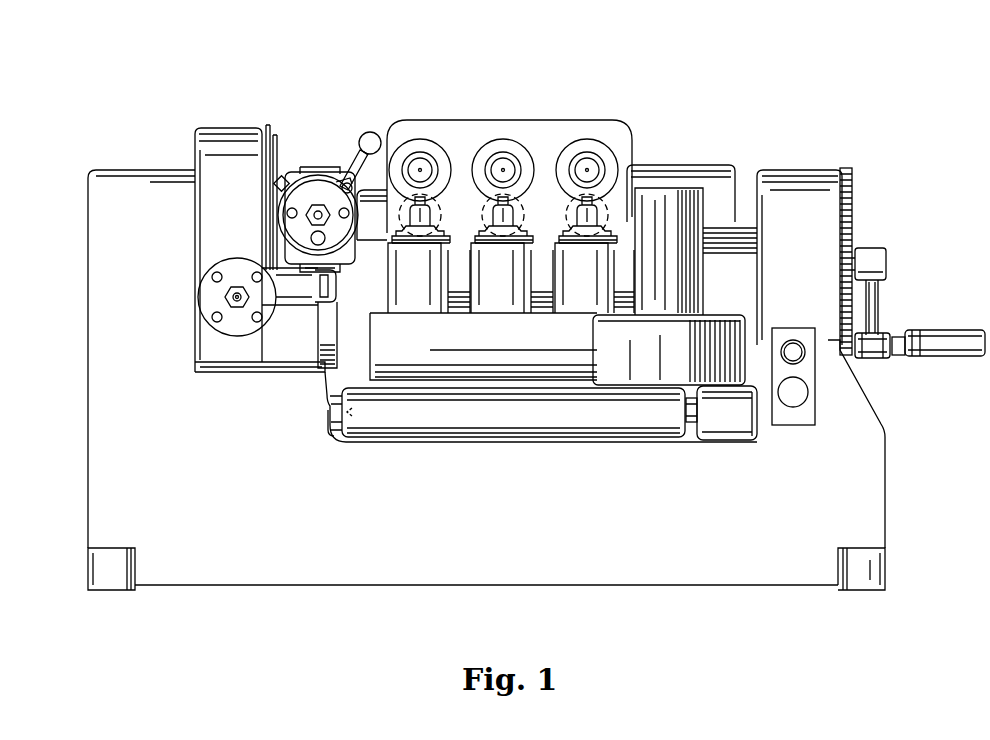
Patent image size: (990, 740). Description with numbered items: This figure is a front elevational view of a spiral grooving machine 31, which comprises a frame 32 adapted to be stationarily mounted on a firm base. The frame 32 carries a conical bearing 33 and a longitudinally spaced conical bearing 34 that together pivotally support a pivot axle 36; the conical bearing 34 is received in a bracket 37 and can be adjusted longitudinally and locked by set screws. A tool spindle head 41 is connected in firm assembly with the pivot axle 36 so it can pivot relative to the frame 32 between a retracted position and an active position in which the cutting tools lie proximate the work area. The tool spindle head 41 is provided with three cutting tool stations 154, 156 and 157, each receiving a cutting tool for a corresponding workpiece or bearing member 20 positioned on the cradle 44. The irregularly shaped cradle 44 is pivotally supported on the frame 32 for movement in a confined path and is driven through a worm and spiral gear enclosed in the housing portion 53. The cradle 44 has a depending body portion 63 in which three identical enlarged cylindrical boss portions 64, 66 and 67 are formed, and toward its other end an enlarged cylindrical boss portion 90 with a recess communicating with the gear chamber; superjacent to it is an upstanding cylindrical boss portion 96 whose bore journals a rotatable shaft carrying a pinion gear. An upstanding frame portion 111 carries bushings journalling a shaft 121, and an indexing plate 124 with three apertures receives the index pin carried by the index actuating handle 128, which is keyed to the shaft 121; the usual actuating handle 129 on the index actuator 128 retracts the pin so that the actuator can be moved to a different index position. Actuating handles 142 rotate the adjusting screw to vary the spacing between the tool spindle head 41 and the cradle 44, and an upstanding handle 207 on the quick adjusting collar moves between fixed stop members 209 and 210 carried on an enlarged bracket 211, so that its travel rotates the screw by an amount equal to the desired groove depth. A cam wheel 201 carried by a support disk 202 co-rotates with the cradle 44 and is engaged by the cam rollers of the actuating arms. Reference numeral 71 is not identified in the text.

The spiral grooving machine 31 is at (87, 162).
The frame 32 is at (88, 470).
The conical bearing 33 is at (336, 436).
The conical bearing 34 is at (694, 420).
The pivot axle 36 is at (590, 422).
The bracket 37 is at (742, 440).
The tool spindle head 41 is at (445, 120).
The cradle 44 is at (384, 190).
The housing portion 53 is at (208, 128).
The depending body portion 63 is at (340, 280).
The enlarged cylindrical boss portion 64 is at (483, 288).
The enlarged cylindrical boss portion 66 is at (512, 255).
The enlarged cylindrical boss portion 67 is at (594, 255).
The flange 71 is at (444, 232).
The workpiece or bearing member 20 is at (503, 212).
The enlarged cylindrical boss portion 90 is at (690, 330).
The upstanding cylindrical boss portion 96 is at (688, 268).
The upstanding frame portion 111 is at (790, 170).
The shaft 121 is at (864, 248).
The indexing plate 124 is at (854, 190).
The index actuating handle 128 is at (878, 300).
The actuating handle 129 is at (930, 332).
The actuating handles 142 is at (333, 199).
The cutting tool station 154 is at (438, 148).
The cutting tool station 156 is at (520, 148).
The cutting tool station 157 is at (603, 148).
The cam wheel 201 is at (268, 125).
The support disk 202 is at (277, 160).
The upstanding handle 207 is at (366, 132).
The fixed stop member 209 is at (286, 182).
The fixed stop member 210 is at (346, 182).
The enlarged bracket 211 is at (808, 397).